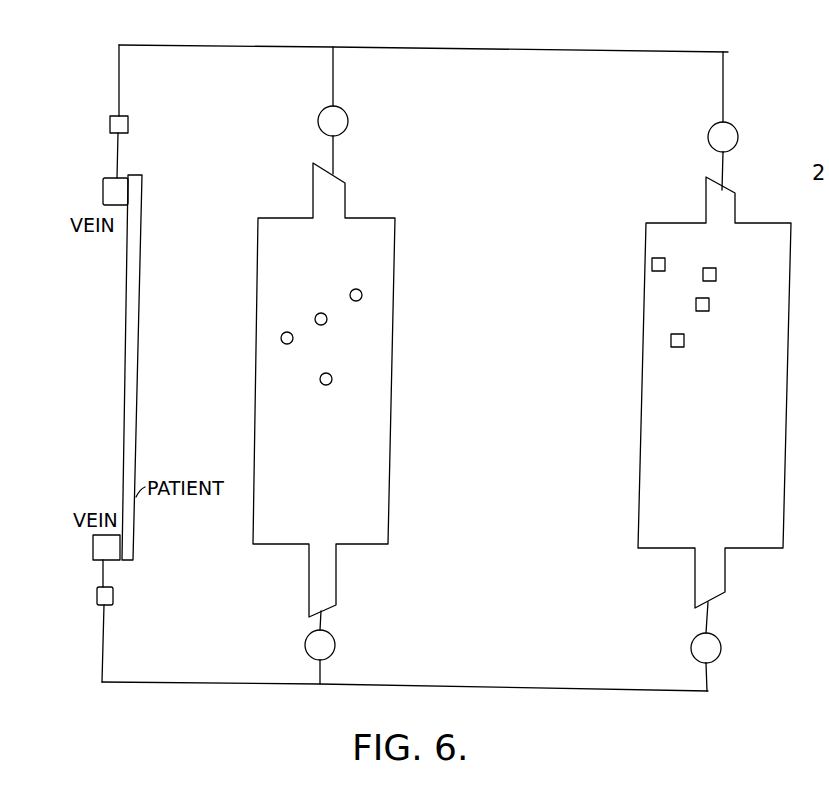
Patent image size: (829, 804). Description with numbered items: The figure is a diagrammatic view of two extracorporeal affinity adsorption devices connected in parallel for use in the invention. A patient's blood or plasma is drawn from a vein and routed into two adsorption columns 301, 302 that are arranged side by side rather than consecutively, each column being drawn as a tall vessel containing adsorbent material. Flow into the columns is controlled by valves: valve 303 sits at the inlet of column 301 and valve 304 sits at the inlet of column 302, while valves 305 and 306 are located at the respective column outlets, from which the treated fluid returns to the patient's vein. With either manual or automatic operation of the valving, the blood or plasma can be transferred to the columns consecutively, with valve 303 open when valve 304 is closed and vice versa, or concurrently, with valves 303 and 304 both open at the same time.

The column 301 is at (269, 384).
The column 302 is at (763, 389).
The valve 303 is at (348, 121).
The valve 304 is at (707, 137).
The valve 305 is at (335, 645).
The valve 306 is at (690, 648).